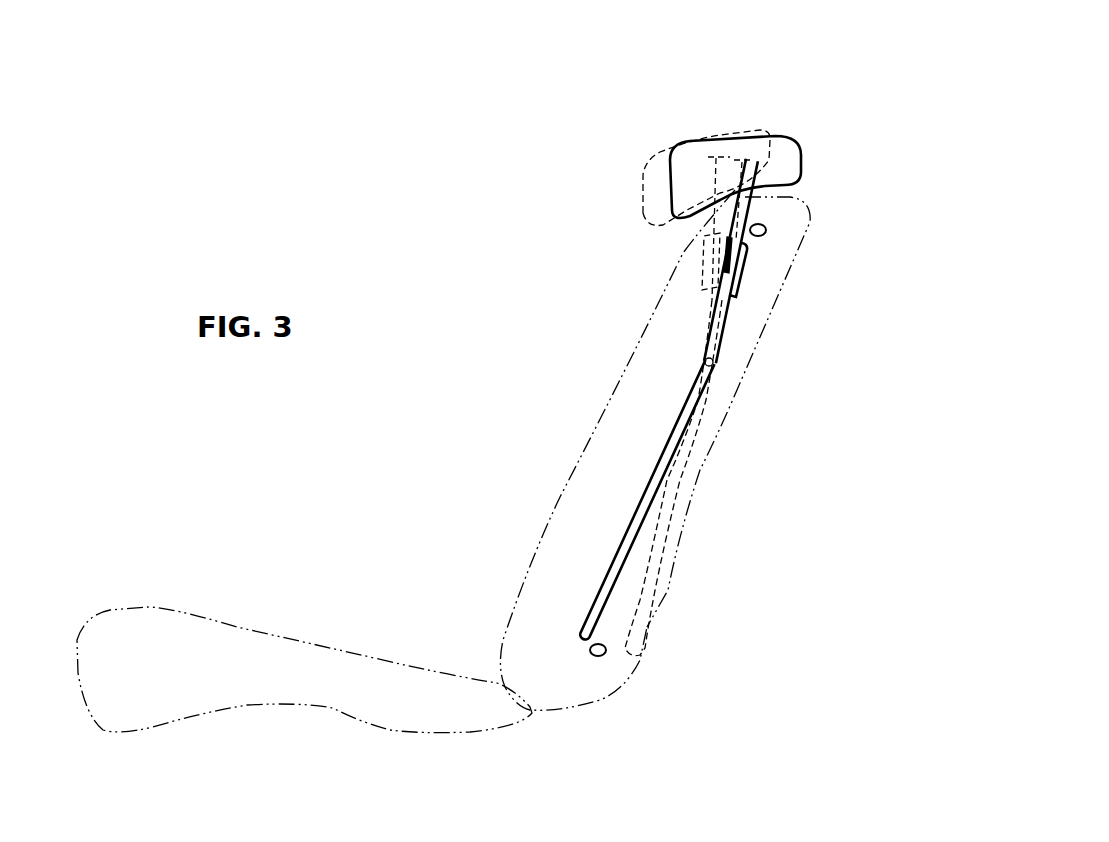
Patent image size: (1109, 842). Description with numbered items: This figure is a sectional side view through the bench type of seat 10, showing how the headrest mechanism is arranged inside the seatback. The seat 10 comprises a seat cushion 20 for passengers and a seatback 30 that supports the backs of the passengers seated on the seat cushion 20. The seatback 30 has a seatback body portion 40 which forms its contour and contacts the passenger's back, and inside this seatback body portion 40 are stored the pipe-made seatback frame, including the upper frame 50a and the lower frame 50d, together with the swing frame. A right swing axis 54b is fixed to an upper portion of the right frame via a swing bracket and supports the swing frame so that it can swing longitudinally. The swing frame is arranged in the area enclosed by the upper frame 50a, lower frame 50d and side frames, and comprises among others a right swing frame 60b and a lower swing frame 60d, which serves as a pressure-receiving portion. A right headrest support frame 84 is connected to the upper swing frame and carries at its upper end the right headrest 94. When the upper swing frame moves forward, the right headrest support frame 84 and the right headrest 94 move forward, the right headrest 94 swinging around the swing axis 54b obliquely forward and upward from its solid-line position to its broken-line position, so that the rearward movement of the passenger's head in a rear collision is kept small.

The seat 10 is at (870, 103).
The seat cushion 20 is at (327, 660).
The seatback 30 is at (773, 315).
The seatback body portion 40 is at (783, 290).
The upper frame 50a is at (766, 229).
The lower frame 50d is at (602, 657).
The right swing axis 54b is at (713, 362).
The right swing frame 60b is at (643, 510).
The lower swing frame 60d is at (612, 626).
The right headrest support frame 84 is at (742, 198).
The right headrest 94 is at (803, 153).